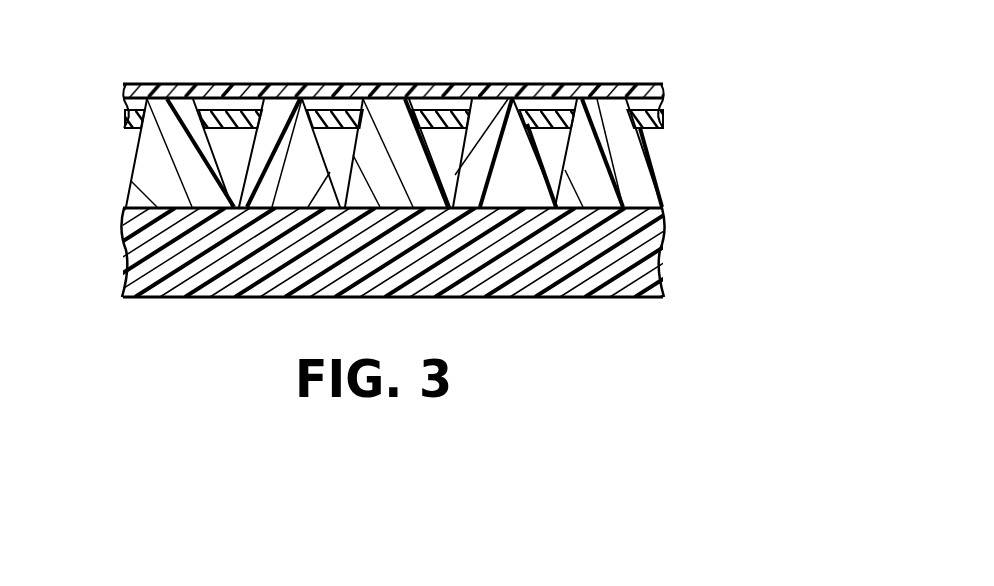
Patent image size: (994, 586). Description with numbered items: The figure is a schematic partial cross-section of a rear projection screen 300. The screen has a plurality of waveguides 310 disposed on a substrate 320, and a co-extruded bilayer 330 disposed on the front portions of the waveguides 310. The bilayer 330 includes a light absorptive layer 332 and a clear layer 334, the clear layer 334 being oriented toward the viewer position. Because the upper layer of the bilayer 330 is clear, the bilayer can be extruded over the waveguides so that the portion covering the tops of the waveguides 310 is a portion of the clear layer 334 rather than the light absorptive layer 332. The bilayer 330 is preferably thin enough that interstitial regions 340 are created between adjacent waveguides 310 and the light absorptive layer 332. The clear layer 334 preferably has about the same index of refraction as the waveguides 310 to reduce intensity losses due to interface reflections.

The rear projection screen 300 is at (752, 118).
The waveguides 310 is at (173, 156).
The substrate 320 is at (582, 273).
The co-extruded bilayer 330 is at (353, 72).
The light absorptive layer 332 is at (228, 113).
The clear layer 334 is at (346, 97).
The interstitial regions 340 is at (553, 147).